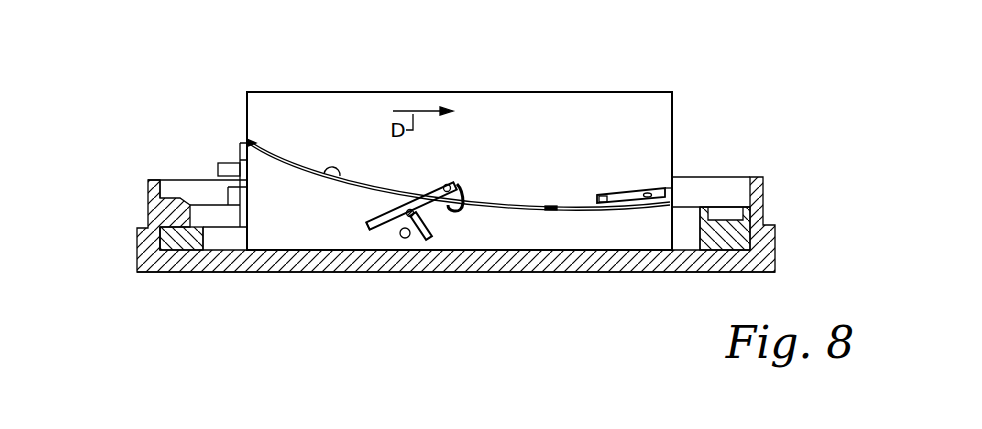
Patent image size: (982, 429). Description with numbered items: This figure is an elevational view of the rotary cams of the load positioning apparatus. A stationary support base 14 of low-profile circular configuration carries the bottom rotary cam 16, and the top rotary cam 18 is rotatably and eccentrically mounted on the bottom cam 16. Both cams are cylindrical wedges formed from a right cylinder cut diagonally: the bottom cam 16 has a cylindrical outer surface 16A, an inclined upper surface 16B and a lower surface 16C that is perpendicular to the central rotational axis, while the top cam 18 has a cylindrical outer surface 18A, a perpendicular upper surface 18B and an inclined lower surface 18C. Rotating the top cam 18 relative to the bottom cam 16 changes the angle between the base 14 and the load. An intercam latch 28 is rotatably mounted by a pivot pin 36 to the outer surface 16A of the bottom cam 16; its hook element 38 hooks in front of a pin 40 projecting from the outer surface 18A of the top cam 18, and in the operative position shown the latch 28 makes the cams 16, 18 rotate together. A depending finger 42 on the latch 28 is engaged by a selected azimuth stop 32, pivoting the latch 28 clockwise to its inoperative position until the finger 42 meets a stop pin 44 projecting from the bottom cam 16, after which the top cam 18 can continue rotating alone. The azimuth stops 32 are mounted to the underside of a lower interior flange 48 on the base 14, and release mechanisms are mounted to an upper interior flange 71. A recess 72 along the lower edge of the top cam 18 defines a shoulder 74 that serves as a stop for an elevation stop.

The stationary support base 14 is at (685, 272).
The bottom rotary cam 16 is at (308, 252).
The cylindrical outer surface of bottom cam 16A is at (675, 231).
The upper surface of bottom cam 16B is at (337, 178).
The lower surface of bottom cam 16C is at (568, 273).
The top rotary cam 18 is at (673, 97).
The cylindrical outer surface of top cam 18A is at (672, 127).
The upper surface of top cam 18B is at (548, 92).
The lower surface of top cam 18C is at (553, 205).
The intercam latch 28 is at (380, 213).
The azimuth stop 32 is at (235, 160).
The pivot pin 36 is at (410, 208).
The hook element 38 is at (458, 182).
The pin 40 is at (444, 186).
The depending finger 42 is at (437, 226).
The stop pin 44 is at (401, 234).
The lower interior flange 48 is at (176, 243).
The upper interior flange 71 is at (172, 210).
The recess 72 is at (650, 190).
The shoulder 74 is at (607, 195).